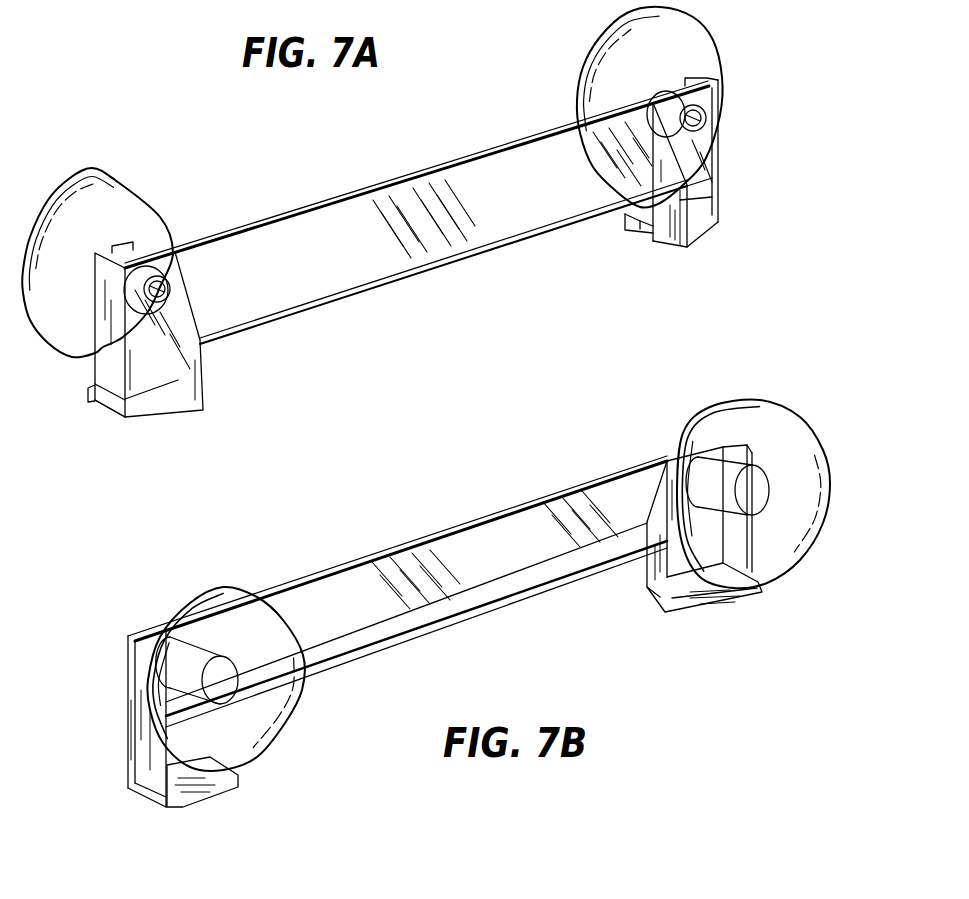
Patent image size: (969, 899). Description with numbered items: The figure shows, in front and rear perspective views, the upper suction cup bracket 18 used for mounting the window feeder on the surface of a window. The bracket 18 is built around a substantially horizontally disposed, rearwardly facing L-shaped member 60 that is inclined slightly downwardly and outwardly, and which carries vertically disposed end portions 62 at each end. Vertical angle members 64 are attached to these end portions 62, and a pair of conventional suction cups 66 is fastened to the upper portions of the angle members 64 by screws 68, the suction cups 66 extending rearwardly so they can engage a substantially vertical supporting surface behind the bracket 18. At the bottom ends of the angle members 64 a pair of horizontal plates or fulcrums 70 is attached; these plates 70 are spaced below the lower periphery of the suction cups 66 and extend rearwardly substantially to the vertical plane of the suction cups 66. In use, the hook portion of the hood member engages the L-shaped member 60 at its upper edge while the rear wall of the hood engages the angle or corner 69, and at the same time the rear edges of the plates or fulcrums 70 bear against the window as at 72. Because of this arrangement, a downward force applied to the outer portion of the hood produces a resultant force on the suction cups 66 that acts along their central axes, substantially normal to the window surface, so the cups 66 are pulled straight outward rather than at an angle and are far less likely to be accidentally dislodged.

In FIG. 7A, the upper suction cup bracket 18 is at (366, 184).
In FIG. 7B, the upper suction cup bracket 18 is at (433, 528).
In FIG. 7A, the L-shaped member 60 is at (468, 178).
In FIG. 7B, the L-shaped member 60 is at (507, 535).
In FIG. 7A, the end portions 62 is at (210, 388).
In FIG. 7B, the end portions 62 is at (650, 577).
In FIG. 7A, the vertical angle members 64 is at (115, 393).
In FIG. 7B, the vertical angle members 64 is at (143, 665).
In FIG. 7A, the suction cups 66 is at (143, 191).
In FIG. 7B, the suction cups 66 is at (220, 615).
In FIG. 7A, the screws 68 is at (160, 284).
In FIG. 7A, the angle or corner 69 is at (470, 260).
In FIG. 7B, the angle or corner 69 is at (416, 625).
In FIG. 7A, the horizontal plates or fulcrums 70 is at (90, 403).
In FIG. 7B, the horizontal plates or fulcrums 70 is at (223, 778).
In FIG. 7A, the rear edges of the plates engaging the window 72 is at (95, 385).
In FIG. 7B, the rear edges of the plates engaging the window 72 is at (200, 797).